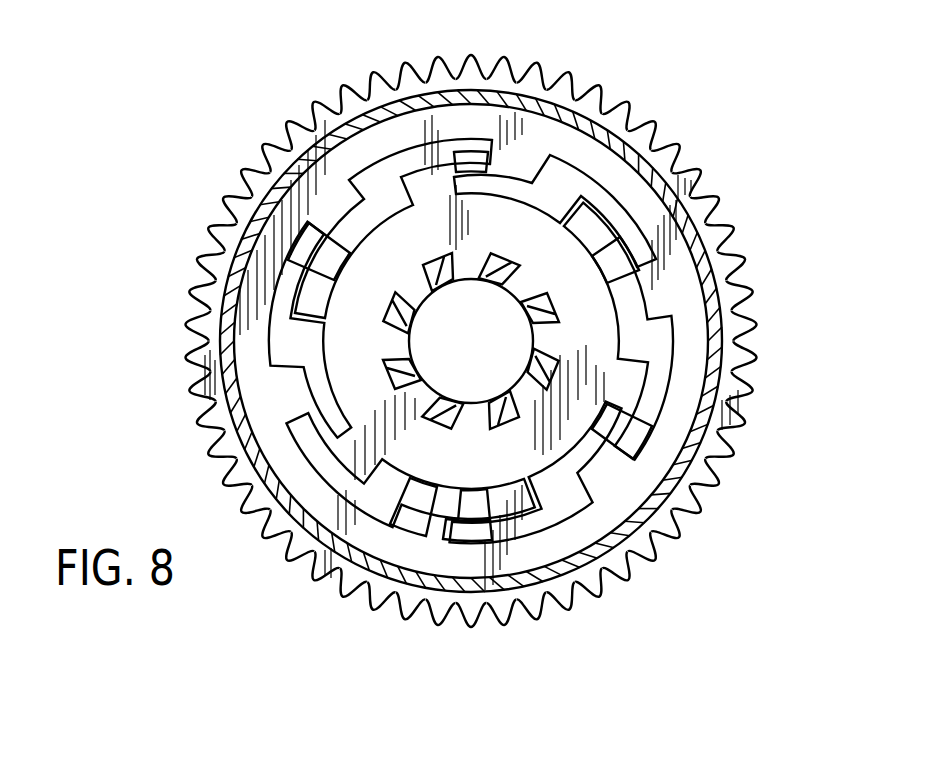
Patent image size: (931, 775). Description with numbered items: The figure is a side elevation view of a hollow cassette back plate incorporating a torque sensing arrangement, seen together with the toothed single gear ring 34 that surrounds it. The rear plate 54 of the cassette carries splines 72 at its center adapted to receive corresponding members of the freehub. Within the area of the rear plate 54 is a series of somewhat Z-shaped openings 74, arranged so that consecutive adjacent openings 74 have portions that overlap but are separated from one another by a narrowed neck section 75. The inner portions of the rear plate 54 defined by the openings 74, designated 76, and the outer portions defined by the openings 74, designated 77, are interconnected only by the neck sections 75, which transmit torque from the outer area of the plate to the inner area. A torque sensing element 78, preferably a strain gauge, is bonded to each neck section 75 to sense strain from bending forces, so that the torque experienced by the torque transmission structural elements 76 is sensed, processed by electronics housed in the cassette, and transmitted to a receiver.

The single gear ring 34 is at (764, 236).
The back plate 54 is at (665, 440).
The splines 72 is at (377, 345).
The Z-shaped openings 74 is at (380, 187).
The neck section 75 is at (623, 300).
The inner portions of the rear plate 76 is at (440, 183).
The outer portions of the rear plate 77 is at (327, 188).
The torque sensing element 78 is at (467, 153).